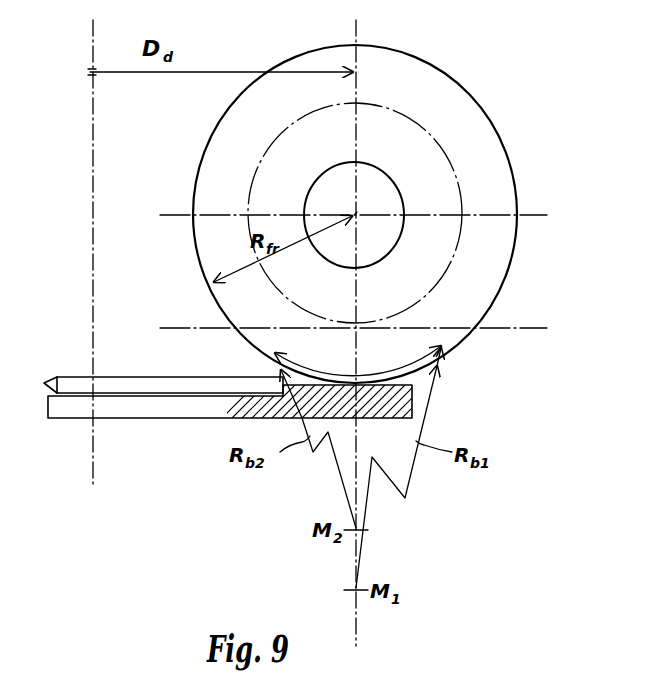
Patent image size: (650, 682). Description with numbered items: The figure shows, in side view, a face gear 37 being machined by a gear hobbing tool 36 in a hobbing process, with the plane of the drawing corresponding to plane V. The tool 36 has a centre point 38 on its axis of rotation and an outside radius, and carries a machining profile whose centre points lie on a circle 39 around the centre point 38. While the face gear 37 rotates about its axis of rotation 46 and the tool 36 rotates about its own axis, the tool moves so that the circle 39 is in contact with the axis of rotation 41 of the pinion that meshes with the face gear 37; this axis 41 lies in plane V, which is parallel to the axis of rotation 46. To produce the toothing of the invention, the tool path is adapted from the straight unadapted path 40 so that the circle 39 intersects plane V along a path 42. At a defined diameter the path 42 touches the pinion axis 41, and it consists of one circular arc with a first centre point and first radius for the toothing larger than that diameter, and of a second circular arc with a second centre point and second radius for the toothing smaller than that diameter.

The gear hobbing tool 36 is at (443, 73).
The face gear 37 is at (228, 412).
The centre point 38 is at (359, 211).
The circle 39 is at (460, 185).
The unadapted path 40 is at (172, 215).
The axis of rotation of the pinion 41 is at (176, 328).
The path 42 is at (275, 353).
The axis of rotation of the face gear 46 is at (93, 468).